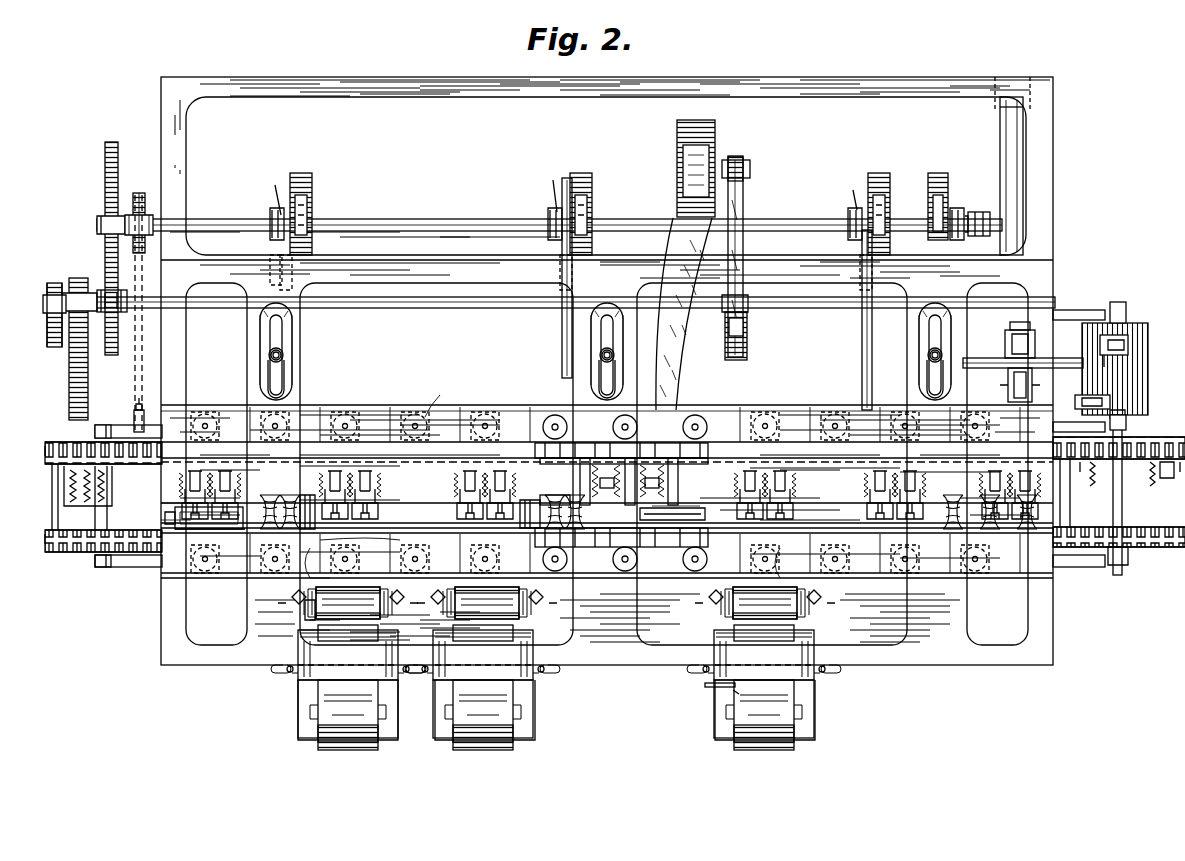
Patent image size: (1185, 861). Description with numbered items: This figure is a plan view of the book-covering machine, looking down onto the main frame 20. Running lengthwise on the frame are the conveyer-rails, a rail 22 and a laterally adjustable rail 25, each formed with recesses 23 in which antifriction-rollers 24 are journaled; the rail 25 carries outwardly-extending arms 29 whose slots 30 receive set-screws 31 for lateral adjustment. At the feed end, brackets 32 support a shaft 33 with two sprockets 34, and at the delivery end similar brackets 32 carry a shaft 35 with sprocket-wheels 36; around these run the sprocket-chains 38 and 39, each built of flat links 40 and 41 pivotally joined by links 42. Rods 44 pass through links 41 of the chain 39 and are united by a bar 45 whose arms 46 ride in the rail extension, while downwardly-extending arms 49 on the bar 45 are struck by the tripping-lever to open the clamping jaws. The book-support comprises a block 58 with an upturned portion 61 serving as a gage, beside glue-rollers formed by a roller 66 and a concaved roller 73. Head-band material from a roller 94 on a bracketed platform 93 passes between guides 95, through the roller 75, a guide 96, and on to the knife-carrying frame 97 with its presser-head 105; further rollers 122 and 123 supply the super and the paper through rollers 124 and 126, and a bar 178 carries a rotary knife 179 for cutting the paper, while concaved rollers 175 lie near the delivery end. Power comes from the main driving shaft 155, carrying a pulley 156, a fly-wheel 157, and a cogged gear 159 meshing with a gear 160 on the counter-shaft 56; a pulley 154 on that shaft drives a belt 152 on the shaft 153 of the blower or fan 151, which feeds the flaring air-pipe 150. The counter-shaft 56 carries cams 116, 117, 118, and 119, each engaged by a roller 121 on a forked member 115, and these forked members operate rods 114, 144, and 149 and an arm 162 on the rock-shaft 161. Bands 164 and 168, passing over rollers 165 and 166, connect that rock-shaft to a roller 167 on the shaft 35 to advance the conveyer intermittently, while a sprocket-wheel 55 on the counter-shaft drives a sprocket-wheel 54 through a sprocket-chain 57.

The main frame 20 is at (422, 95).
The counter-shaft 56 is at (412, 217).
The main or driving shaft 155 is at (430, 318).
The cam 116 is at (311, 188).
The cam 117 is at (591, 188).
The cam 118 is at (868, 185).
The cam 119 is at (938, 172).
The blower or fan 151 is at (677, 138).
The forked member 115 is at (278, 198).
The roller 121 is at (297, 264).
The rod 149 is at (268, 280).
The belt 152 is at (743, 210).
The shaft 153 is at (750, 170).
The pulley 154 is at (748, 335).
The flaring air-pipe 150 is at (678, 350).
The rock-shaft 161 is at (1024, 182).
The arm 162 is at (977, 212).
The rod 114 is at (562, 318).
The rod 144 is at (862, 331).
The gear 160 is at (114, 162).
The sprocket-wheel 55 is at (138, 194).
The fly-wheel 157 is at (69, 396).
The pulley 156 is at (47, 346).
The cogged gear 159 is at (108, 342).
The sprocket-chain 57 is at (138, 376).
The sprocket-wheel 54 is at (141, 412).
The shaft 33 is at (96, 516).
The sprockets 34 is at (120, 516).
The brackets 32 is at (116, 427).
The shaft 35 is at (1114, 476).
The sprocket-wheels 36 is at (1122, 500).
The belt or band 164 is at (1062, 358).
The roller 165 is at (1005, 334).
The roller 166 is at (1008, 376).
The roller 167 is at (1144, 378).
The band or belt 168 is at (1074, 398).
The outwardly-extending arms 29 is at (292, 356).
The slot 30 is at (290, 350).
The set-screws 31 is at (270, 356).
The recesses 23 is at (396, 377).
The antifriction-roller 24 is at (350, 421).
The rail 25 is at (446, 397).
The links 40 is at (566, 444).
The links 42 is at (638, 444).
The links 41 is at (672, 458).
The rods 44 is at (664, 464).
The sprocket-chain 39 is at (570, 468).
The roller 66 is at (284, 496).
The concaved roller 73 is at (302, 494).
The bar 45 is at (382, 511).
The arms 46 is at (466, 529).
The presser-head 105 is at (420, 518).
The downwardly-extending arms 49 is at (360, 516).
The knife-carrying frame 97 is at (328, 508).
The upturned portion 61 is at (175, 520).
The block 58 is at (208, 528).
The sprocket-chain 38 is at (360, 543).
The rail 22 is at (425, 566).
The guide 96 is at (320, 566).
The rollers 175 is at (990, 520).
The roller 75 is at (348, 603).
The roller 124 is at (487, 603).
The roller 126 is at (765, 603).
The bracketed platform 93 is at (556, 710).
The guides 95 is at (376, 657).
The roller 94 is at (360, 727).
The roller 122 is at (500, 727).
The roller 123 is at (782, 727).
The bar 178 is at (708, 689).
The rotary knife 179 is at (734, 690).